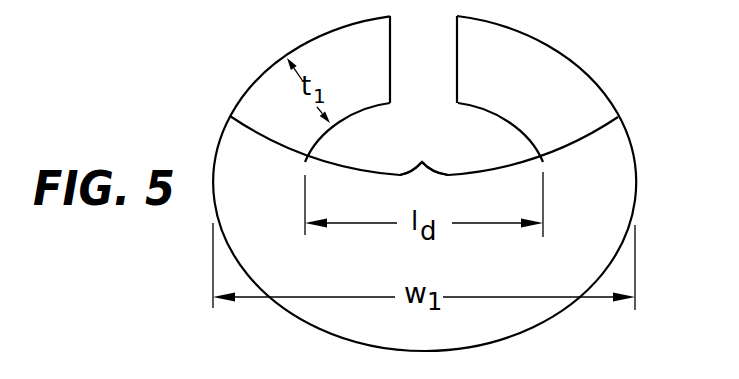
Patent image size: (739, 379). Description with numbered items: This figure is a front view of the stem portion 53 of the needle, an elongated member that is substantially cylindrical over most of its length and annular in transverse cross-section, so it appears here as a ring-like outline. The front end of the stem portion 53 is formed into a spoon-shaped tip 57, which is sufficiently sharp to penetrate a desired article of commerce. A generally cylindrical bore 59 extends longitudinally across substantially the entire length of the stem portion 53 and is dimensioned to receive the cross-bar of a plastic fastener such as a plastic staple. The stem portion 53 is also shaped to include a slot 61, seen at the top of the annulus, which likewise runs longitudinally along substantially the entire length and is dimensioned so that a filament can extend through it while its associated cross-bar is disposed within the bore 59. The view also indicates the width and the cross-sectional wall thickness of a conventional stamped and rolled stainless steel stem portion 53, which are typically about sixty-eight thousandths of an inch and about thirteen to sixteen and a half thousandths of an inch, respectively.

The stem portion 53 is at (618, 64).
The spoon-shaped tip 57 is at (422, 162).
The bore 59 is at (380, 160).
The slot 61 is at (438, 60).